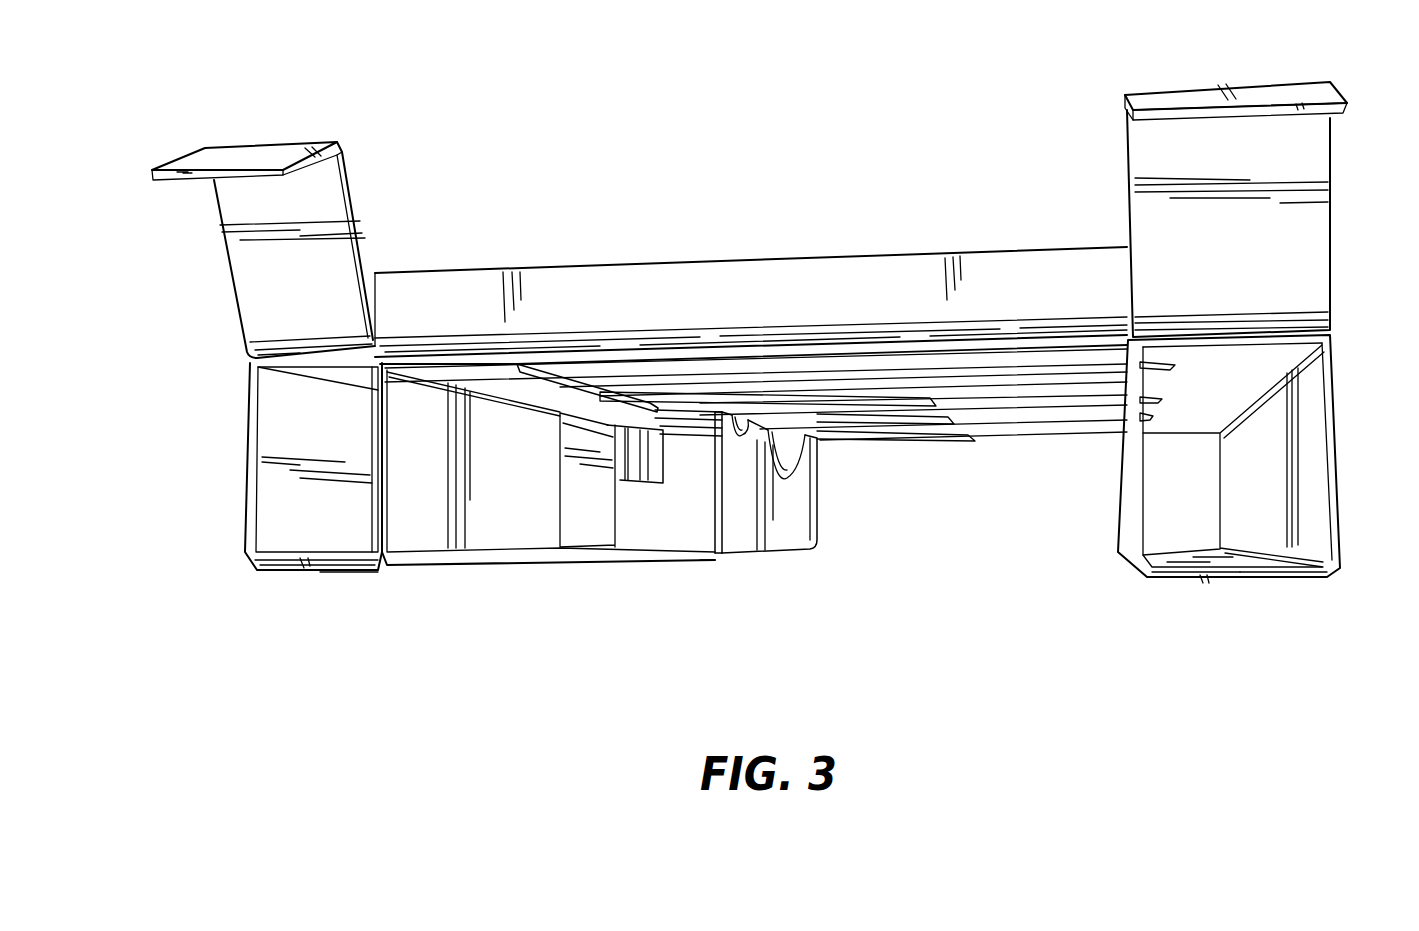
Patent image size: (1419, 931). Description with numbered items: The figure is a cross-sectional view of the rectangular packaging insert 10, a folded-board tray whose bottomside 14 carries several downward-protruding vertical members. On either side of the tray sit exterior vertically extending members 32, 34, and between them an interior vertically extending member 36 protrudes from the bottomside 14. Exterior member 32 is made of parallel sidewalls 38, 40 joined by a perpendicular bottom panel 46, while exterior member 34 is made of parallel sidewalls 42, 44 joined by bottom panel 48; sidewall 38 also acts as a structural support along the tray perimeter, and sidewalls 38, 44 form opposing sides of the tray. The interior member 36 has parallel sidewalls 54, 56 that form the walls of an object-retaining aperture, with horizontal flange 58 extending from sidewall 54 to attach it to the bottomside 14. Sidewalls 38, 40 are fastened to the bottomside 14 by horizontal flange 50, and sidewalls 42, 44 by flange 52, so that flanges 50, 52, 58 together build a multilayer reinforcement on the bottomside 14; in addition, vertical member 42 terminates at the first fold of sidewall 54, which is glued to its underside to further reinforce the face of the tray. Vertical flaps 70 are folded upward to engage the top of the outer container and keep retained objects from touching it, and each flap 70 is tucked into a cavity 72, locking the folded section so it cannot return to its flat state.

The packaging insert 10 is at (808, 182).
The bottomside 14 is at (888, 588).
The exterior vertically extending member 32 is at (300, 565).
The exterior vertically extending member 34 is at (1200, 582).
The interior vertically extending member 36 is at (693, 562).
The sidewall 38 is at (252, 480).
The sidewall 40 is at (385, 497).
The sidewall 42 is at (1138, 472).
The sidewall 44 is at (1340, 480).
The bottom panel 46 is at (338, 574).
The bottom panel 48 is at (1263, 590).
The horizontal flange 50 is at (543, 378).
The flange 52 is at (640, 405).
The sidewall 54 is at (815, 490).
The sidewall 56 is at (623, 510).
The horizontal flange 58 is at (832, 443).
The vertical flap 70 is at (268, 168).
The cavity 72 is at (282, 447).